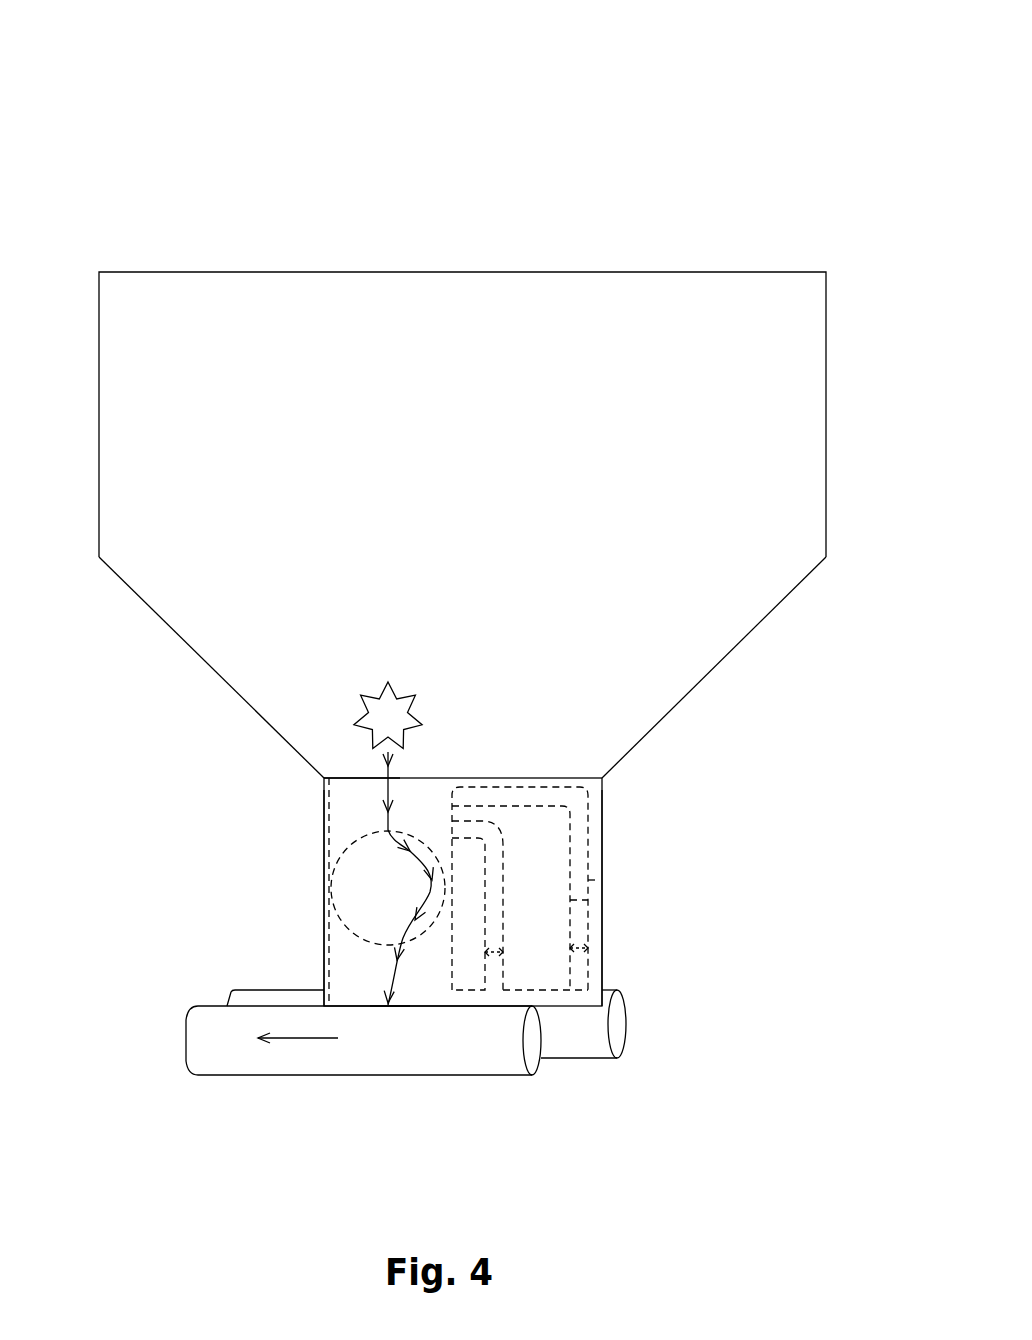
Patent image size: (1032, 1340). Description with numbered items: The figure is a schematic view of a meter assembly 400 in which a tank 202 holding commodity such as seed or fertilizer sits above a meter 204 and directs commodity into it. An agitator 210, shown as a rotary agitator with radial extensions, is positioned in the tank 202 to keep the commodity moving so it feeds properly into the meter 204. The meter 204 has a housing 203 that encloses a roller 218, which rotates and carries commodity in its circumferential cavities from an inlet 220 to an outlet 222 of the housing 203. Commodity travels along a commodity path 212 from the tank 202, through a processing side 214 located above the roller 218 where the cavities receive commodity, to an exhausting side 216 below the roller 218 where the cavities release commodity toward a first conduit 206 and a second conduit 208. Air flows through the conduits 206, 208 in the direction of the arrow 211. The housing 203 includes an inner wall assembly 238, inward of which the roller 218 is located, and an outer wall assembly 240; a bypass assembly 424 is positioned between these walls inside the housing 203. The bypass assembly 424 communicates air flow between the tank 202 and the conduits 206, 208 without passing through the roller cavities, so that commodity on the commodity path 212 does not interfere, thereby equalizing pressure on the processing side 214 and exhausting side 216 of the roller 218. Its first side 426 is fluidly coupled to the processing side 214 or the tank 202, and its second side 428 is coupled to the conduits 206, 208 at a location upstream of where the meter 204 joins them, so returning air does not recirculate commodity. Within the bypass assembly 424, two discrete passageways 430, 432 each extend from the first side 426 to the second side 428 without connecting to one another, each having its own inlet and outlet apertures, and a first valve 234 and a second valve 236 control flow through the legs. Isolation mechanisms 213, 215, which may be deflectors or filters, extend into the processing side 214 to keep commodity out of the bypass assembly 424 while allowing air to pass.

The meter assembly 400 is at (801, 140).
The tank 202 is at (507, 271).
The housing 203 is at (323, 917).
The meter 204 is at (318, 851).
The first conduit 206 is at (200, 1040).
The second conduit 208 is at (588, 1060).
The agitator 210 is at (370, 709).
The arrow 211 is at (300, 1040).
The commodity path 212 is at (389, 1008).
The isolation mechanism 213 is at (448, 800).
The processing side 214 is at (402, 786).
The isolation mechanism 215 is at (481, 826).
The exhausting side 216 is at (422, 972).
The roller 218 is at (333, 890).
The inlet 220 is at (338, 774).
The outlet 222 is at (365, 996).
The first valve 234 is at (500, 953).
The second valve 236 is at (577, 950).
The inner wall assembly 238 is at (383, 832).
The outer wall assembly 240 is at (602, 940).
The bypass assembly 424 is at (614, 840).
The first side 426 is at (564, 772).
The second side 428 is at (643, 910).
The passageway 430 is at (600, 790).
The passageway 432 is at (590, 878).